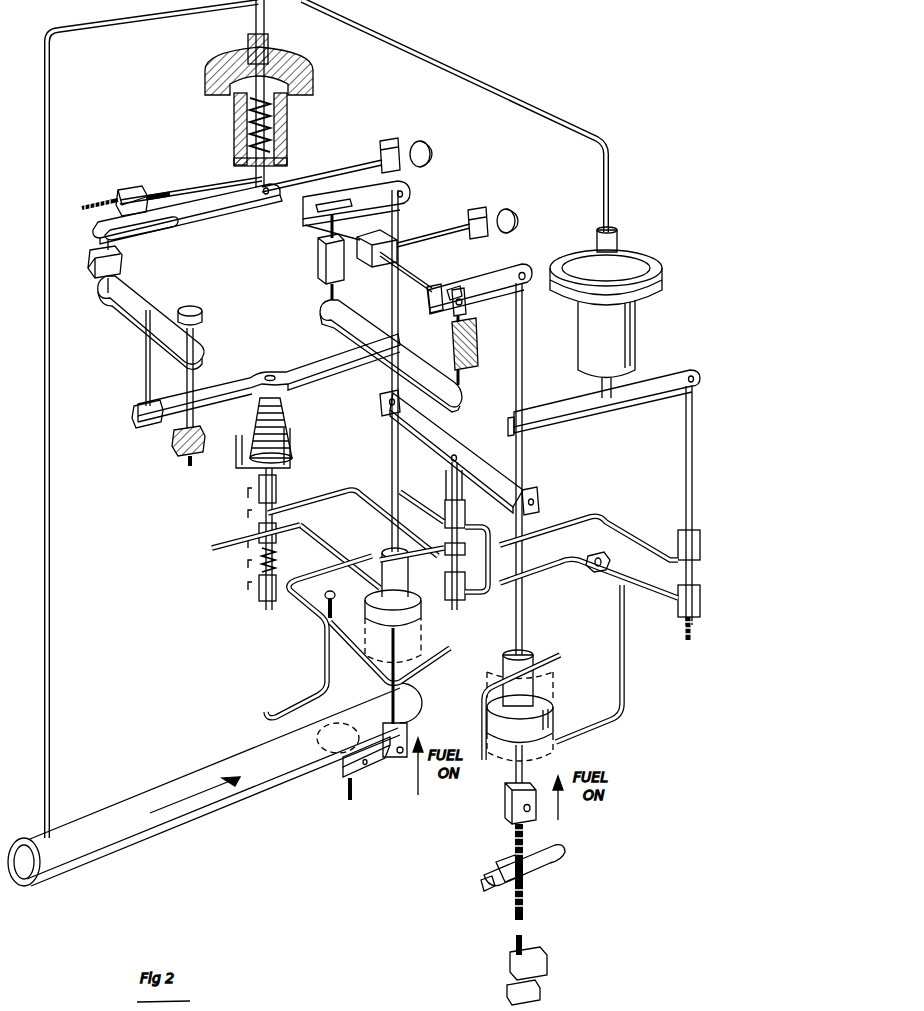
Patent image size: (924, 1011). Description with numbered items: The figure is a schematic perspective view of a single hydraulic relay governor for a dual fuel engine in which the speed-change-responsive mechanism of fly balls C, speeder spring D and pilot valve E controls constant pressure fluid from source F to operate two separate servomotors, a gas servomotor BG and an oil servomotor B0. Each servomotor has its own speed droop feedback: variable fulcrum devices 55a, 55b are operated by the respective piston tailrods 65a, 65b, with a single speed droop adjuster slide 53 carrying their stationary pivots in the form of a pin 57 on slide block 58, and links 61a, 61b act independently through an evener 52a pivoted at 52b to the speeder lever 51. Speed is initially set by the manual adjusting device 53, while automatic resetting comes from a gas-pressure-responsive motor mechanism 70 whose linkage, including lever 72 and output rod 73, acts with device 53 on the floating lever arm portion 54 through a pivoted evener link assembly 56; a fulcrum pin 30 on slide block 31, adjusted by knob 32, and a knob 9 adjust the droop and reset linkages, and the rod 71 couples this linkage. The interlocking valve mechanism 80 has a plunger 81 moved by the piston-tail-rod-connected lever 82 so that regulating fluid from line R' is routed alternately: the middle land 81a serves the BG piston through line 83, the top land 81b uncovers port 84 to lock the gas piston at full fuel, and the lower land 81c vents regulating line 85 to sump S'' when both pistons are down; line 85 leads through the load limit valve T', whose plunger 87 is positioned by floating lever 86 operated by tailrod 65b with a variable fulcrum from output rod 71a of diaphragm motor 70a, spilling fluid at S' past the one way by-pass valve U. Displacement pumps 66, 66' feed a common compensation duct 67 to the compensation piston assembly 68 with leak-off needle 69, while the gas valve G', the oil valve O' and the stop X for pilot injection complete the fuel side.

The knob 9 is at (522, 220).
The fulcrum pin 30 is at (150, 225).
The slide block 31 is at (126, 190).
The adjusting knob 32 is at (432, 152).
The speeder lever 51 is at (278, 363).
The evener 52a is at (348, 320).
The evener pivot 52b is at (405, 340).
The speed droop adjuster slide 53 is at (208, 321).
The floating lever arm portion 54 is at (155, 424).
The variable fulcrum speed droop device 55a is at (302, 234).
The variable fulcrum speed droop device 55b is at (470, 266).
The evener link assembly 56 is at (130, 332).
The pin 57 is at (410, 270).
The slide block 58 is at (406, 226).
The link 61a is at (330, 294).
The link 61b is at (462, 378).
The piston tailrod 65a is at (392, 282).
The piston tailrod 65b is at (528, 388).
The actuating displacement pump 66 is at (383, 555).
The actuating displacement pump 66' is at (531, 674).
The compensation fluid duct 67 is at (380, 672).
The compensation piston assembly 68 is at (254, 588).
The leak-off adjustment needle 69 is at (334, 600).
The gas-pressure-responsive motor mechanism 70 is at (290, 126).
The diaphragm motor 70a is at (660, 275).
The rod 71 is at (292, 168).
The output rod 71a is at (618, 382).
The lever 72 is at (232, 215).
The output rod 73 is at (122, 262).
The valve mechanism 80 is at (448, 464).
The plunger 81 is at (468, 492).
The middle land 81a is at (470, 540).
The top land 81b is at (464, 512).
The lower land 81c is at (465, 592).
The lever 82 is at (440, 438).
The line 83 is at (489, 570).
The port 84 is at (413, 526).
The regulating fluid line 85 is at (572, 516).
The floating lever 86 is at (598, 420).
The plunger 87 is at (700, 530).
The servomotor B0 is at (557, 716).
The servomotor BG is at (420, 610).
The fly balls C is at (294, 447).
The speeder spring D is at (288, 408).
The pilot valve E is at (254, 514).
The source F is at (222, 560).
The gas valve G' is at (347, 764).
The valve O' is at (530, 851).
The regulating fluid line R' is at (353, 510).
The spill point S' is at (718, 595).
The sump S'' is at (427, 578).
The load limit valve T' is at (706, 585).
The one way by-pass valve U is at (592, 572).
The stop X is at (535, 938).